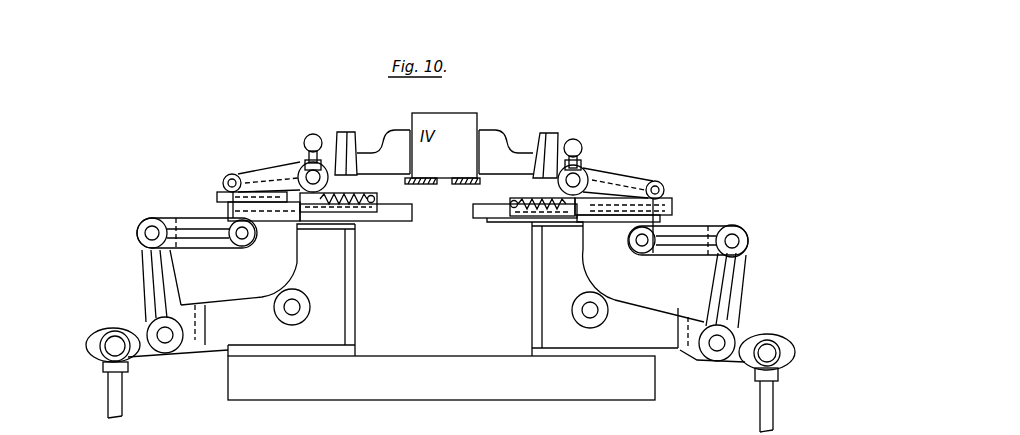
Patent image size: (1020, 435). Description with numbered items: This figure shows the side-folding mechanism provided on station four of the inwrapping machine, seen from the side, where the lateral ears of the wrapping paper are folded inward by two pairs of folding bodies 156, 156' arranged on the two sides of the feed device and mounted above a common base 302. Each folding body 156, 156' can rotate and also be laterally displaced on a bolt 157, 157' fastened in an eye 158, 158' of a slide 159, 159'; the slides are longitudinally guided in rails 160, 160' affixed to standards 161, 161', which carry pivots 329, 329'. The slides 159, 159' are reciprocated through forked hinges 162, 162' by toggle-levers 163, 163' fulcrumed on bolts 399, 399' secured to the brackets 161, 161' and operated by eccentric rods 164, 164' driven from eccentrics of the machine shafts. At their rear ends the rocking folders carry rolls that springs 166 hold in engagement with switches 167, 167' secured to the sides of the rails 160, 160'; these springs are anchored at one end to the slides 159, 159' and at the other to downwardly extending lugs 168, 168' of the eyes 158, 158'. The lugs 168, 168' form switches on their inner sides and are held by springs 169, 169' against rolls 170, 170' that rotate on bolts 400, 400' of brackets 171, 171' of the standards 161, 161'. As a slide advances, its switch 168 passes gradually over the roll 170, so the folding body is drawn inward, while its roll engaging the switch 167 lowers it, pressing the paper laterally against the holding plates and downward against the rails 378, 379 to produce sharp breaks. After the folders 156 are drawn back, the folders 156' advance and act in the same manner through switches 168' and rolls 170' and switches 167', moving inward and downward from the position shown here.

The base 302 is at (441, 378).
The standard 161' is at (268, 290).
The standard 161 is at (585, 287).
The left pivot 329' is at (276, 313).
The right pivot 329 is at (594, 311).
The forked hinge 162' is at (197, 222).
The forked hinge 162 is at (681, 232).
The toggle-lever 163' is at (169, 303).
The toggle-lever 163 is at (734, 293).
The bolt 399' is at (171, 348).
The bolt 399 is at (717, 352).
The eccentric rod 164' is at (113, 361).
The eccentric rod 164 is at (777, 339).
The folding body 156' is at (372, 147).
The folding body 156 is at (494, 141).
The rail 378 is at (413, 186).
The rail 379 is at (469, 183).
The spring 169' is at (322, 135).
The spring 169 is at (577, 146).
The eye 158' is at (342, 137).
The eye 158 is at (585, 165).
The bolt 157' is at (300, 170).
The bolt 157 is at (590, 172).
The switch 167' is at (261, 183).
The switch 167 is at (649, 181).
The lug 168' is at (258, 220).
The lug 168 is at (610, 208).
The slide 159' is at (350, 195).
The slide 159 is at (548, 202).
The rail 160' is at (369, 223).
The rail 160 is at (480, 212).
The spring 166 is at (527, 210).
The roll 170' is at (364, 234).
The roll 170 is at (538, 212).
The bracket 171' is at (377, 253).
The bracket 171 is at (562, 232).
The bolt 400' is at (329, 246).
The bolt 400 is at (561, 136).